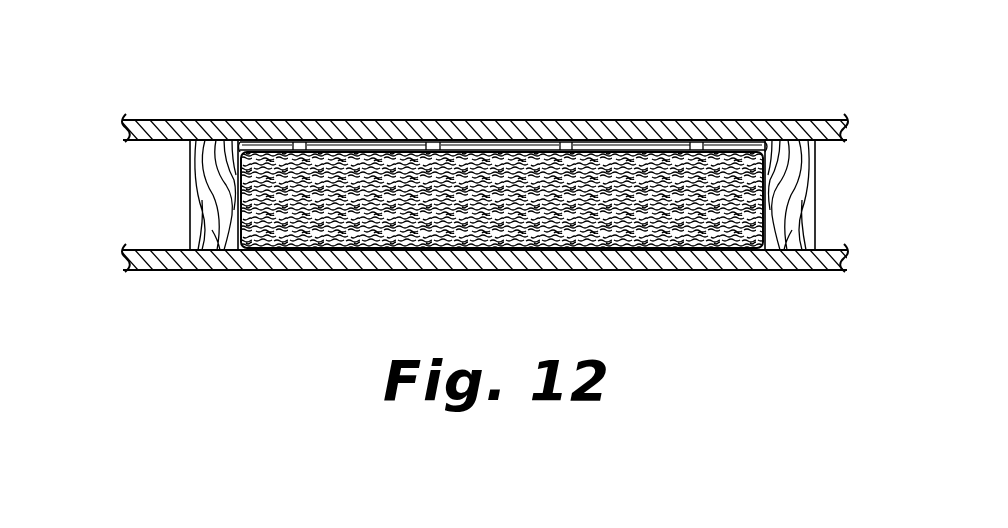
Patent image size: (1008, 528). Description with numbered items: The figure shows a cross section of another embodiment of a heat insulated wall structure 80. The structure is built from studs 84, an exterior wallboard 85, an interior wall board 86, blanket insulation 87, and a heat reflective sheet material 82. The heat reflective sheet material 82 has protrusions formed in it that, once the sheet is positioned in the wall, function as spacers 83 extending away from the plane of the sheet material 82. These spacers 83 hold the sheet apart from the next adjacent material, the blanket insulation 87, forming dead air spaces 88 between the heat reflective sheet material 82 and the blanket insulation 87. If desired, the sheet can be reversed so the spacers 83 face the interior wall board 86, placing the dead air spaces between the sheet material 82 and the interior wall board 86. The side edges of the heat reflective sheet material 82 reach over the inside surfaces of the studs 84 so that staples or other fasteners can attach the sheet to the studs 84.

The heat insulated wall structure 80 is at (302, 92).
The heat reflective sheet material 82 is at (730, 147).
The spacers 83 is at (433, 150).
The studs 84 is at (200, 208).
The exterior wallboard 85 is at (588, 260).
The interior wall board 86 is at (672, 128).
The blanket insulation 87 is at (513, 213).
The dead air spaces 88 is at (395, 150).